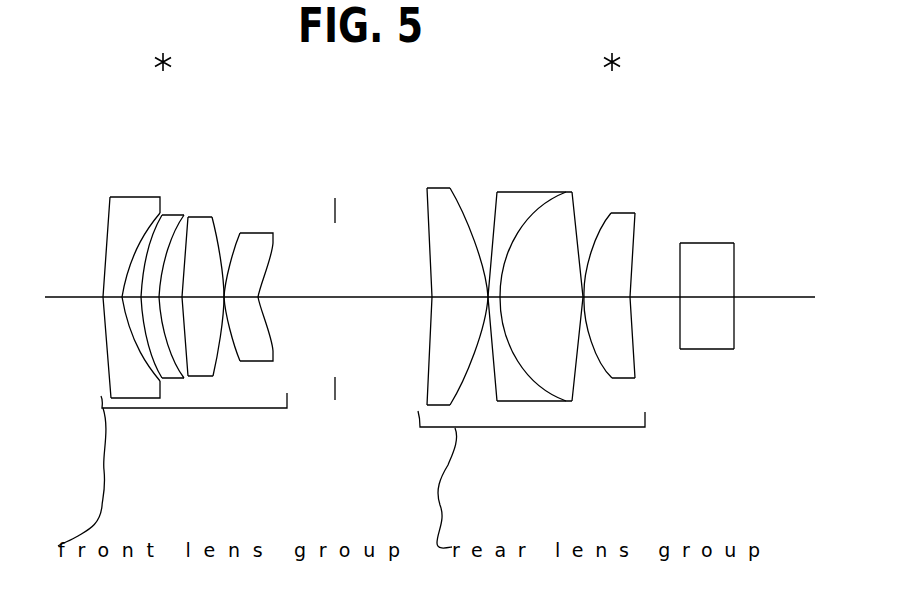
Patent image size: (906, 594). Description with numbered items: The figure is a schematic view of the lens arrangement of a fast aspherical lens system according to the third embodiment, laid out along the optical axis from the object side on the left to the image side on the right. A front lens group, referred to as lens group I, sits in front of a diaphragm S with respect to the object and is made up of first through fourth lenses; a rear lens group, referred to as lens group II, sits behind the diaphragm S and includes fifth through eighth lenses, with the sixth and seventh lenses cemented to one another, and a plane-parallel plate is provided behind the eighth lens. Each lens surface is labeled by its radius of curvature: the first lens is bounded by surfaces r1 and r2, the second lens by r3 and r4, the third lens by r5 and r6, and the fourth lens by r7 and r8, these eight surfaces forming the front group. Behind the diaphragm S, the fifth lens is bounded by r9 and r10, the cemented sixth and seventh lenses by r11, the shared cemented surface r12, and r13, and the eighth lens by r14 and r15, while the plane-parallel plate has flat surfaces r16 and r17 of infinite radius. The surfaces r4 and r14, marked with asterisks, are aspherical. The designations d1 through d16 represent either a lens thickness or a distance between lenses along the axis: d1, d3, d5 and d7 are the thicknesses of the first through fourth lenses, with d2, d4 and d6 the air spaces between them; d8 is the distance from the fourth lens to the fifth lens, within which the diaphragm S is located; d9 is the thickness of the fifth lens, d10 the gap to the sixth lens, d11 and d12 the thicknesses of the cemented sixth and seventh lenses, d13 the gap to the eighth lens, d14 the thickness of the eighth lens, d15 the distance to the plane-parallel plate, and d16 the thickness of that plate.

The radius of curvature of first lens surface r1 is at (110, 197).
The radius of curvature of second lens surface r2 is at (159, 213).
The radius of curvature of third lens surface r3 is at (163, 215).
The radius of curvature of fourth lens surface r4 is at (183, 215).
The radius of curvature of fifth lens surface r5 is at (188, 217).
The radius of curvature of sixth lens surface r6 is at (212, 217).
The radius of curvature of seventh lens surface r7 is at (240, 233).
The radius of curvature of eighth lens surface r8 is at (273, 233).
The radius of curvature of ninth lens surface r9 is at (427, 188).
The radius of curvature of tenth lens surface r10 is at (450, 188).
The radius of curvature of eleventh lens surface r11 is at (497, 192).
The radius of curvature of twelfth lens surface r12 is at (565, 192).
The radius of curvature of thirteenth lens surface r13 is at (572, 192).
The radius of curvature of fourteenth lens surface r14 is at (610, 213).
The radius of curvature of fifteenth lens surface r15 is at (635, 213).
The radius of curvature of sixteenth surface r16 is at (680, 243).
The radius of curvature of seventeenth surface r17 is at (734, 243).
The diaphragm S is at (336, 208).
The lens thickness d1 is at (103, 297).
The distance between lenses d2 is at (129, 297).
The lens thickness d3 is at (150, 297).
The distance between lenses d4 is at (176, 297).
The lens thickness d5 is at (201, 297).
The distance between lenses d6 is at (226, 297).
The lens thickness d7 is at (237, 297).
The distance between lenses d8 is at (345, 297).
The lens thickness d9 is at (460, 297).
The distance between lenses d10 is at (489, 297).
The lens thickness d11 is at (488, 297).
The lens thickness d12 is at (543, 297).
The distance between lenses d13 is at (583, 297).
The lens thickness d14 is at (630, 297).
The distance between lenses d15 is at (640, 297).
The plate thickness d16 is at (709, 297).